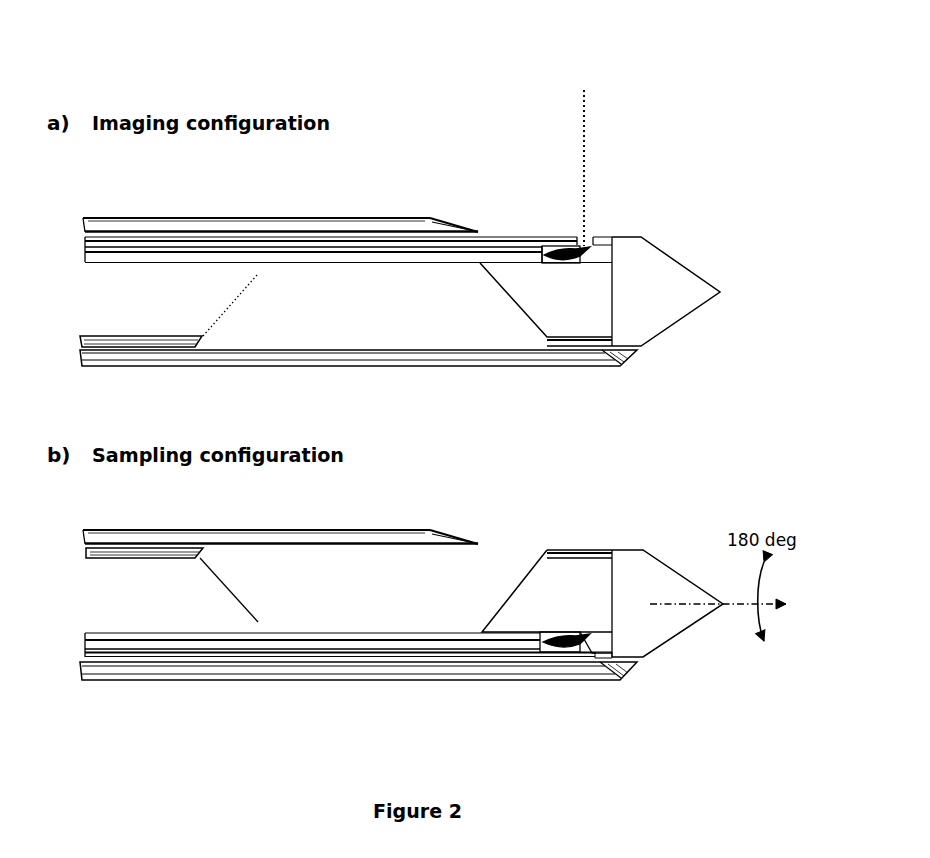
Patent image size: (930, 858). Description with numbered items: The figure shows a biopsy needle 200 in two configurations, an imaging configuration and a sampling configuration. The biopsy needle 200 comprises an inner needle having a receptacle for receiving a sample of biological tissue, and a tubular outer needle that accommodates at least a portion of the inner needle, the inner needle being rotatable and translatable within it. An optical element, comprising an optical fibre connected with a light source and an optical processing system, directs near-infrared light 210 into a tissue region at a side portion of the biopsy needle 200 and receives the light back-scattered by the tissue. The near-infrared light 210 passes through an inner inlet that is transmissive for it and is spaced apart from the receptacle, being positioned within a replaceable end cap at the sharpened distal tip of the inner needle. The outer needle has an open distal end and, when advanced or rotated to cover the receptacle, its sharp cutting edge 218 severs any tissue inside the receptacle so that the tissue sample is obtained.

The biopsy needle 200 is at (475, 131).
The near-infrared light 210 is at (593, 106).
The sharp cutting edge 218 is at (445, 228).